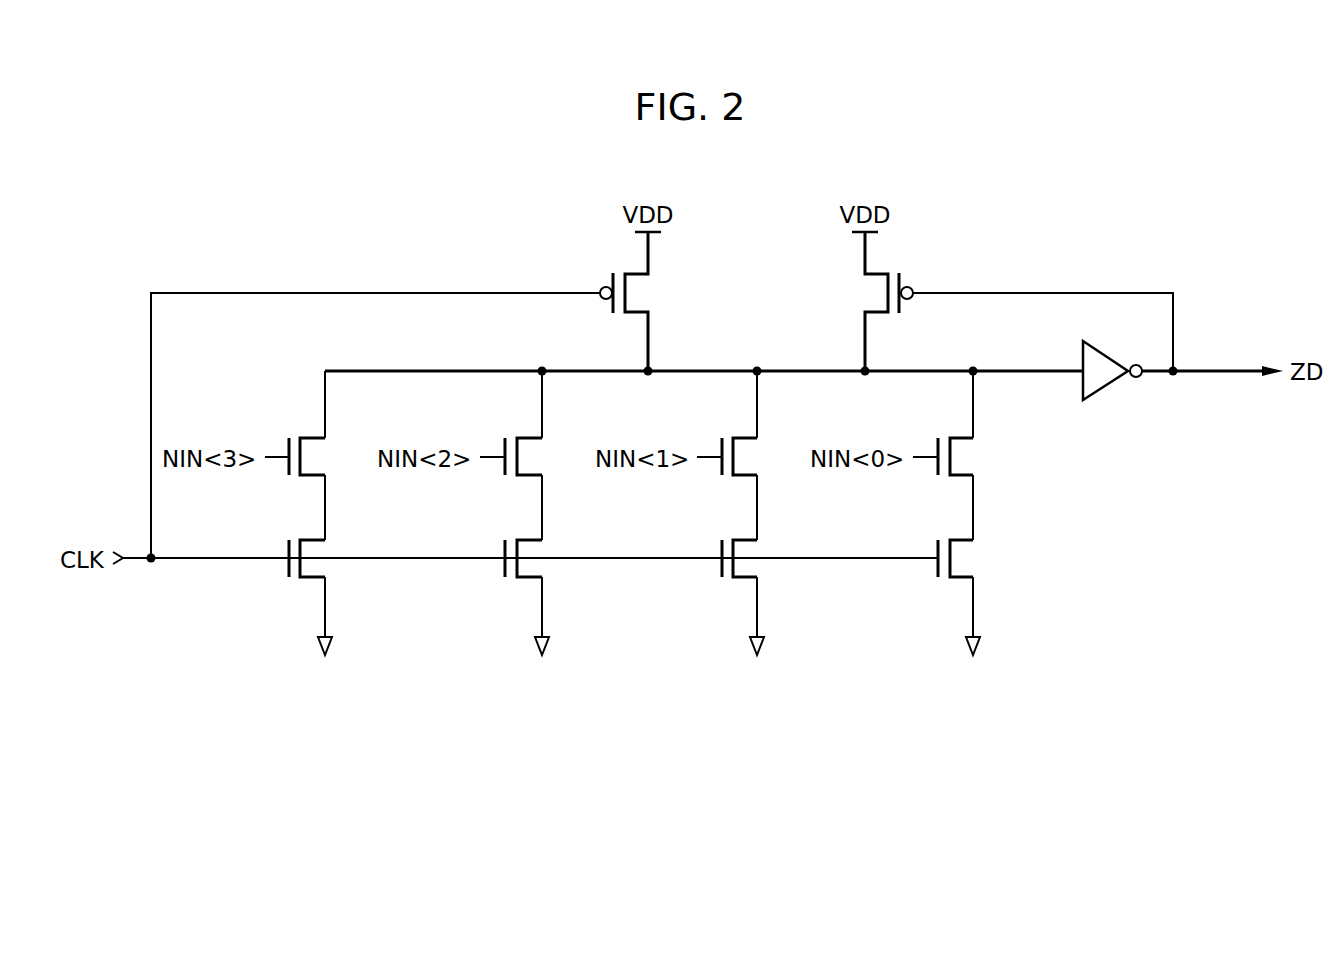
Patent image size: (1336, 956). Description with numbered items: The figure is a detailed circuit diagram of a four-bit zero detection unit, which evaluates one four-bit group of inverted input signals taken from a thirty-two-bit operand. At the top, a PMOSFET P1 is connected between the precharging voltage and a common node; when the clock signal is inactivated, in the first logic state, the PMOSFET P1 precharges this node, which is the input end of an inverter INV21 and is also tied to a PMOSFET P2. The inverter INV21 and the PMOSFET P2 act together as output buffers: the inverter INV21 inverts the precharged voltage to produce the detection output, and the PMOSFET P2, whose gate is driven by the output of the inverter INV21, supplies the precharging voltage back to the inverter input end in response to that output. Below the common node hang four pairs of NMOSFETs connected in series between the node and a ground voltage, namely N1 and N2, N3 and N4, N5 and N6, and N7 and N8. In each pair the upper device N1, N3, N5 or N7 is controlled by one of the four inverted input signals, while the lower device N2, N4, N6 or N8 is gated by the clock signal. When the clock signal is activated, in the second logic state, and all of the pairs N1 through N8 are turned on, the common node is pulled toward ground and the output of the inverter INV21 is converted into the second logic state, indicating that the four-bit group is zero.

The PMOSFET P1 is at (639, 301).
The PMOSFET P2 is at (877, 301).
The NMOSFET N1 is at (304, 439).
The NMOSFET N2 is at (304, 542).
The NMOSFET N3 is at (522, 439).
The NMOSFET N4 is at (522, 542).
The NMOSFET N5 is at (737, 439).
The NMOSFET N6 is at (737, 542).
The NMOSFET N7 is at (954, 439).
The NMOSFET N8 is at (954, 542).
The inverter INV21 is at (1105, 387).